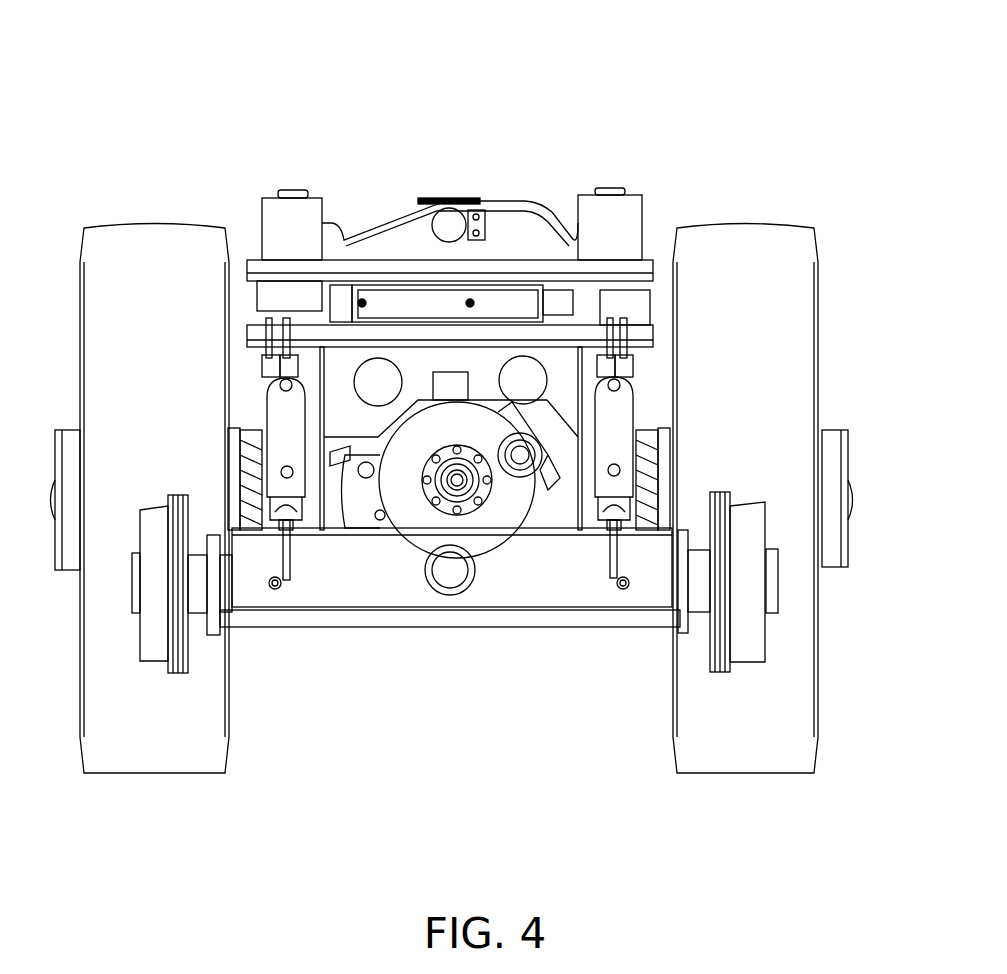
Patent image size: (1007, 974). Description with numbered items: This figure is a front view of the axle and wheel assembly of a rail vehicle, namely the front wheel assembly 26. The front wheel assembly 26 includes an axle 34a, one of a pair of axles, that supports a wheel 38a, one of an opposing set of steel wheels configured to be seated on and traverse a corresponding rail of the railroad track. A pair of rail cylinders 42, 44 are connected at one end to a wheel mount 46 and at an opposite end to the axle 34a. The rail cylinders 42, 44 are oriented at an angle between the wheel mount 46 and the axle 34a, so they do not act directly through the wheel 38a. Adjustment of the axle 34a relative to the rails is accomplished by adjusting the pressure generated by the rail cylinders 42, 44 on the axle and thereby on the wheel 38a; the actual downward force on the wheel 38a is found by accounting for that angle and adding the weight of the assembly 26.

The front wheel assembly 26 is at (597, 92).
The axle 34a is at (703, 607).
The wheel 38a is at (147, 605).
The rail cylinder 42 is at (620, 418).
The rail cylinder 44 is at (287, 404).
The wheel mount 46 is at (395, 238).